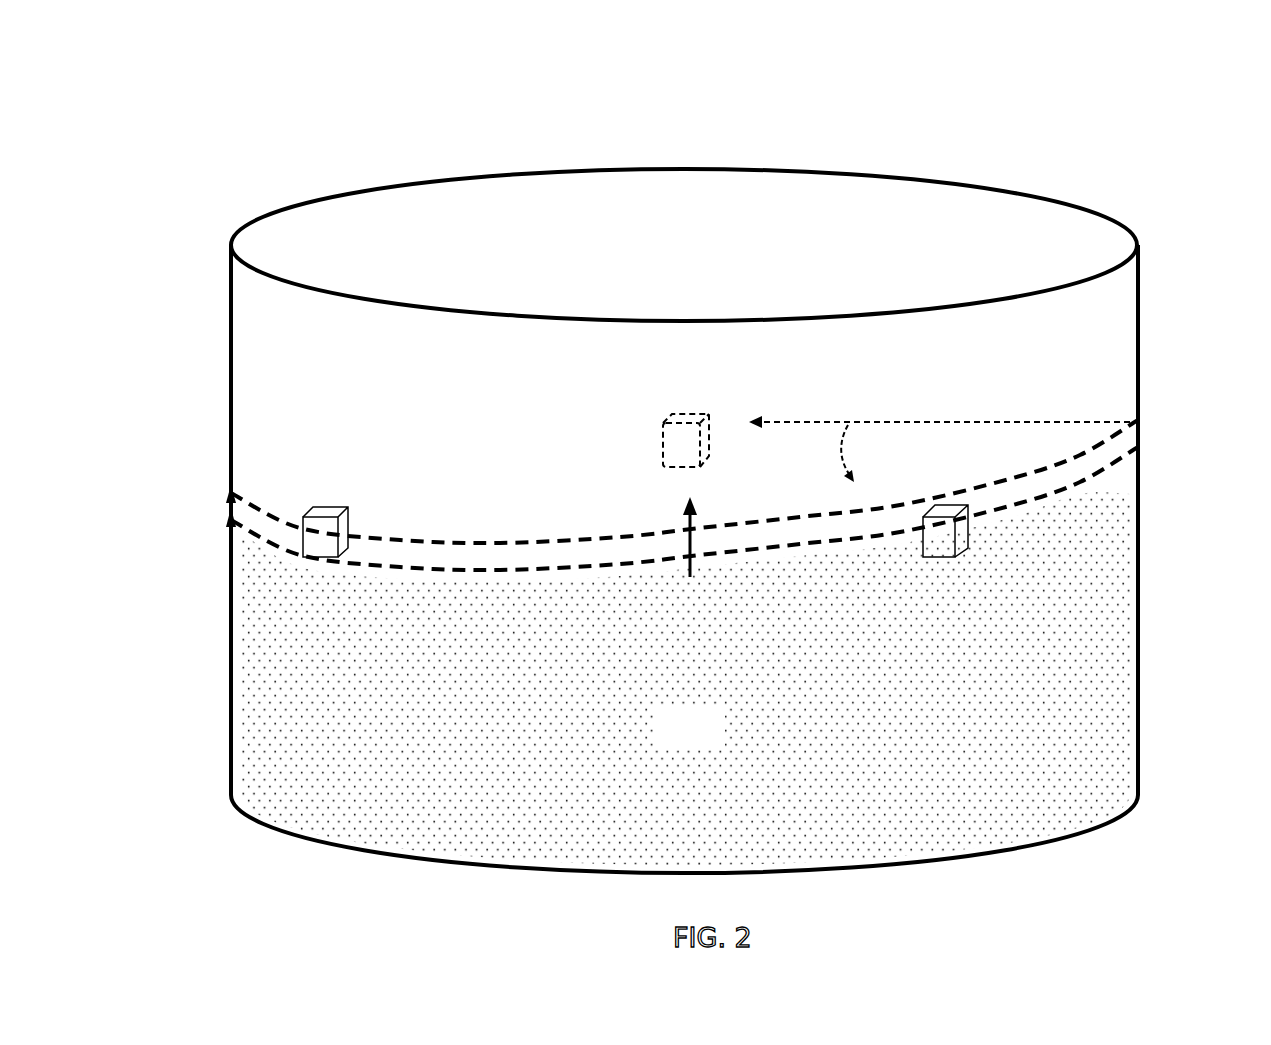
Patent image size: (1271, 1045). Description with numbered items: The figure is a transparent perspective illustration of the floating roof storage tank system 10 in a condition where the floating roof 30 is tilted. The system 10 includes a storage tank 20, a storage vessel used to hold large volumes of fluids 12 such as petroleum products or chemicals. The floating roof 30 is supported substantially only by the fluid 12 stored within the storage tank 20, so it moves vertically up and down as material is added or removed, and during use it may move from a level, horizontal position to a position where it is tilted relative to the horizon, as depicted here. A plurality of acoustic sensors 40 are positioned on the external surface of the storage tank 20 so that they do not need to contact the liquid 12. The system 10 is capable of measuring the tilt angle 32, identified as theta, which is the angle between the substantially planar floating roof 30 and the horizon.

The floating roof storage tank system 10 is at (340, 118).
The fluids 12 is at (703, 734).
The storage tank 20 is at (231, 386).
The floating roof 30 is at (1117, 455).
The tilt angle 32 is at (902, 449).
The acoustic sensors 40 is at (303, 540).